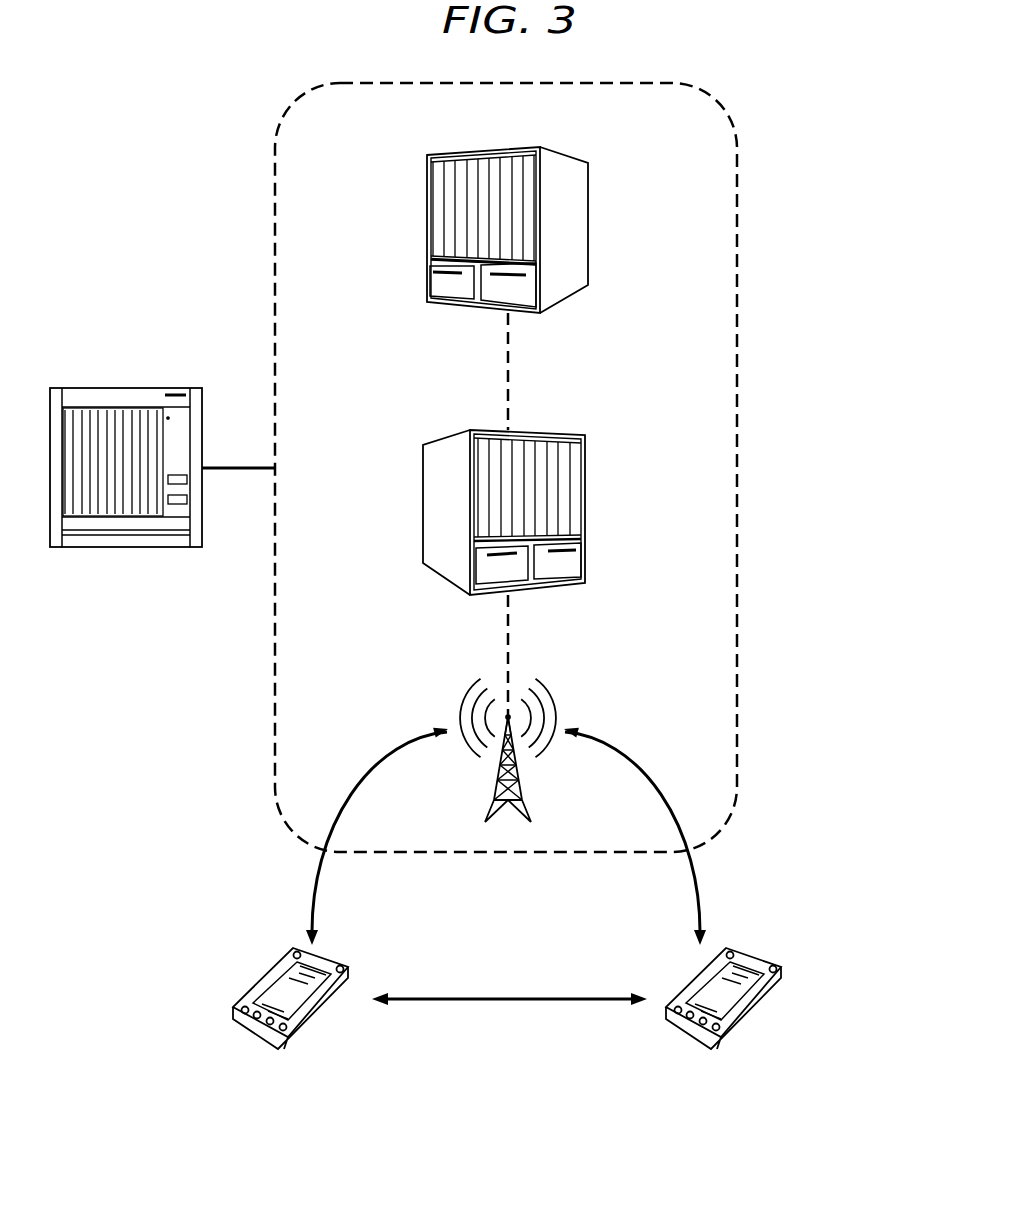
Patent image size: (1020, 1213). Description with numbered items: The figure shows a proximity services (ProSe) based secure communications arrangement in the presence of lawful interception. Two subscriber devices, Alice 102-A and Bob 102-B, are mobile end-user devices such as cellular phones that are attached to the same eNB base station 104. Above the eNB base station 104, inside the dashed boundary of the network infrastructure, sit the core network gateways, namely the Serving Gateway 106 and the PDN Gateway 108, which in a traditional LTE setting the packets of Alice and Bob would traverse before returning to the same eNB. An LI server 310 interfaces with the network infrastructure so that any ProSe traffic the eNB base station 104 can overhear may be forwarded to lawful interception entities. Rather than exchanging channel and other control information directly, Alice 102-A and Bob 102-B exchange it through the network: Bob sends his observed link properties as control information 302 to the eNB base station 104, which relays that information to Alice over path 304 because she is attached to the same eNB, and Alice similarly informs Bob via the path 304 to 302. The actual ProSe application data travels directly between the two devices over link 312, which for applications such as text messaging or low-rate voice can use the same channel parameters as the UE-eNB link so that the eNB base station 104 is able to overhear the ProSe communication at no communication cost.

The Packet Data Network (PDN) Gateway 108 is at (588, 228).
The Serving Gateway 106 is at (587, 512).
The LI server 310 is at (127, 388).
The eNB base station 104 is at (490, 800).
The control information path 304 is at (376, 772).
The control information 302 is at (636, 772).
The subscriber device (Alice) 102-A is at (233, 1008).
The subscriber device (Bob) 102-B is at (745, 1018).
The ProSe communication link 312 is at (505, 1003).